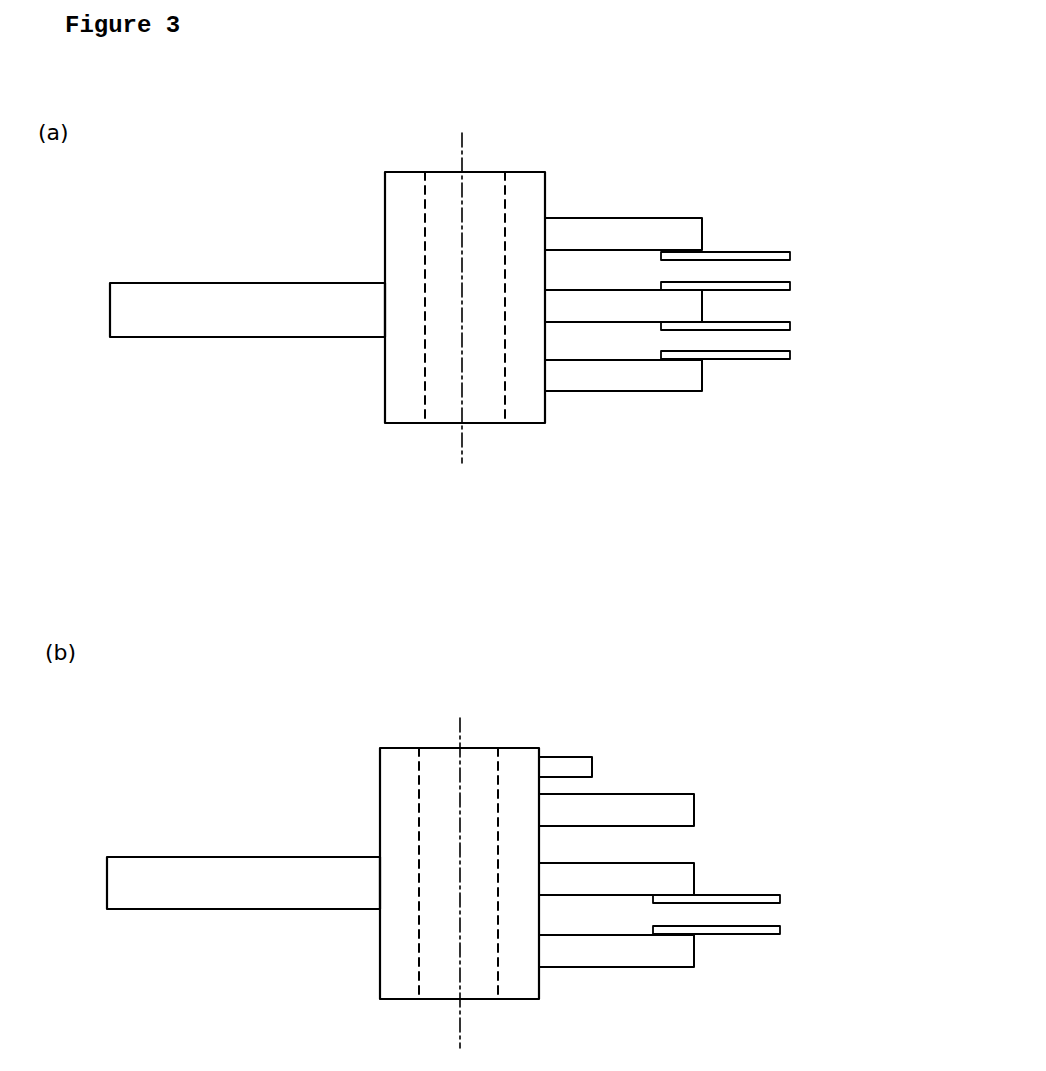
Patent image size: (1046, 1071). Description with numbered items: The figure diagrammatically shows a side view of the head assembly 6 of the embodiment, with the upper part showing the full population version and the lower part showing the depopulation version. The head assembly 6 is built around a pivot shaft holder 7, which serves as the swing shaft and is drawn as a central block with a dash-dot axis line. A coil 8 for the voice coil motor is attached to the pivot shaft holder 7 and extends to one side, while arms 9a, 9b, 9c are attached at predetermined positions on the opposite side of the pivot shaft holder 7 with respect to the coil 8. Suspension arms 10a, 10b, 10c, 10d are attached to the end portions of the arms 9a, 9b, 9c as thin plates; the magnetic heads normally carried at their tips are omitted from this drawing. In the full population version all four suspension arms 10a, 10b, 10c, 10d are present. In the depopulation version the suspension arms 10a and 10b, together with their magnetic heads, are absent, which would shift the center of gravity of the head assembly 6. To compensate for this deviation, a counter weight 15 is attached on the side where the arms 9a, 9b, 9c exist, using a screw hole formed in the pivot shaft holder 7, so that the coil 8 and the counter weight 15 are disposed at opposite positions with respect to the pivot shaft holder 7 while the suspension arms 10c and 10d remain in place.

The head assembly 6 is at (272, 190).
The pivot shaft holder 7 is at (385, 415).
The coil for VCM 8 is at (302, 337).
The arm 9a is at (597, 218).
The arm 9b is at (602, 320).
The arm 9c is at (675, 392).
The suspension arm 10a is at (760, 252).
The suspension arm 10b is at (765, 282).
The suspension arm 10c is at (775, 331).
The suspension arm 10d is at (745, 360).
The counter weight 15 is at (553, 756).